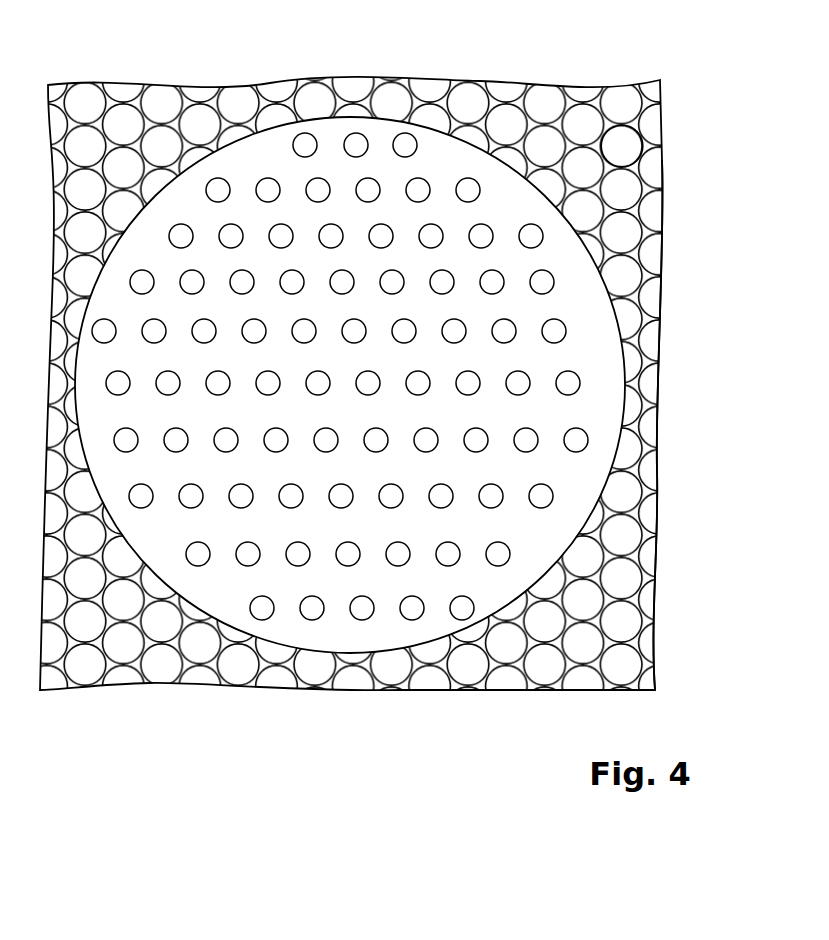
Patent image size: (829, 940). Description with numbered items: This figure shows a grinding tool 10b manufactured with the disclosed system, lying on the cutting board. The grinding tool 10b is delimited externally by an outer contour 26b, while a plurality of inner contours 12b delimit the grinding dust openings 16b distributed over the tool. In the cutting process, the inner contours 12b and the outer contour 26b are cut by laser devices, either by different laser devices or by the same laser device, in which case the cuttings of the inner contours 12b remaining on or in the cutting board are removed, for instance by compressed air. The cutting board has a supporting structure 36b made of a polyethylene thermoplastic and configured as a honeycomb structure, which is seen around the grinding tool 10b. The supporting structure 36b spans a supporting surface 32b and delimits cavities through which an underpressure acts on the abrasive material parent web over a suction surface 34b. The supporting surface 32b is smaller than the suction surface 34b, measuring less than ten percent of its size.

The grinding tool 10b is at (505, 130).
The inner contour 12b is at (347, 146).
The grinding dust opening 16b is at (372, 130).
The outer contour 26b is at (630, 320).
The supporting surface 32b is at (660, 83).
The suction surface 34b is at (650, 140).
The supporting structure 36b is at (657, 425).